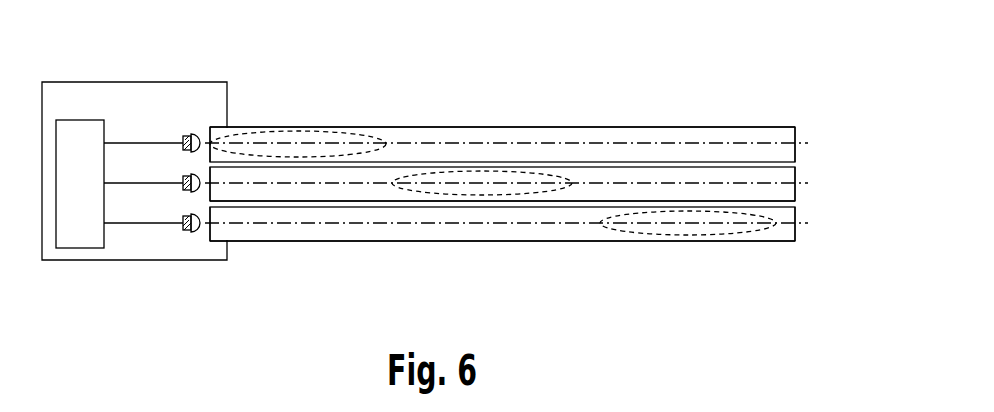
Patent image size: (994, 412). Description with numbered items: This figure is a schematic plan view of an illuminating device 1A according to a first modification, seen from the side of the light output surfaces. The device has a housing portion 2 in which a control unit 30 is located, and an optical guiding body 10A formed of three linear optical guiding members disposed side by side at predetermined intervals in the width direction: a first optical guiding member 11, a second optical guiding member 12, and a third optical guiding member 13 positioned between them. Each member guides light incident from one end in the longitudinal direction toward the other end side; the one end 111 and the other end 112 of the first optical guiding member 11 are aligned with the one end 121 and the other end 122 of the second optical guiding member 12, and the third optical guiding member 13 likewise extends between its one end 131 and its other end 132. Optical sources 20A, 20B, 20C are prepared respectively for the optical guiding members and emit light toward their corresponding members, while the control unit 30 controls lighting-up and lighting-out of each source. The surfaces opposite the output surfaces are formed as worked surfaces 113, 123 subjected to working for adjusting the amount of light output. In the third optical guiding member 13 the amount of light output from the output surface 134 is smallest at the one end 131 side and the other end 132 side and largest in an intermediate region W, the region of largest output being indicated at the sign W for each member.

The illuminating device 1A is at (666, 108).
The housing 2 is at (45, 262).
The control unit 30 is at (80, 120).
The optical guiding body 10A is at (502, 120).
The first optical guiding member 11 is at (380, 136).
The second optical guiding member 12 is at (490, 206).
The third optical guiding member 13 is at (420, 166).
The one end of first optical guiding member 111 is at (210, 128).
The other end of first optical guiding member 112 is at (797, 128).
The worked surface of first optical guiding member 113 is at (298, 140).
The one end of second optical guiding member 121 is at (211, 241).
The other end of second optical guiding member 122 is at (800, 242).
The worked surface of second optical guiding member 123 is at (314, 236).
The one end of third optical guiding member 131 is at (210, 199).
The other end of third optical guiding member 132 is at (796, 194).
The output surface of third optical guiding member 134 is at (371, 194).
The optical source 20A is at (184, 137).
The optical source 20B is at (185, 232).
The third light source 20C is at (184, 178).
The intermediate region W is at (350, 137).